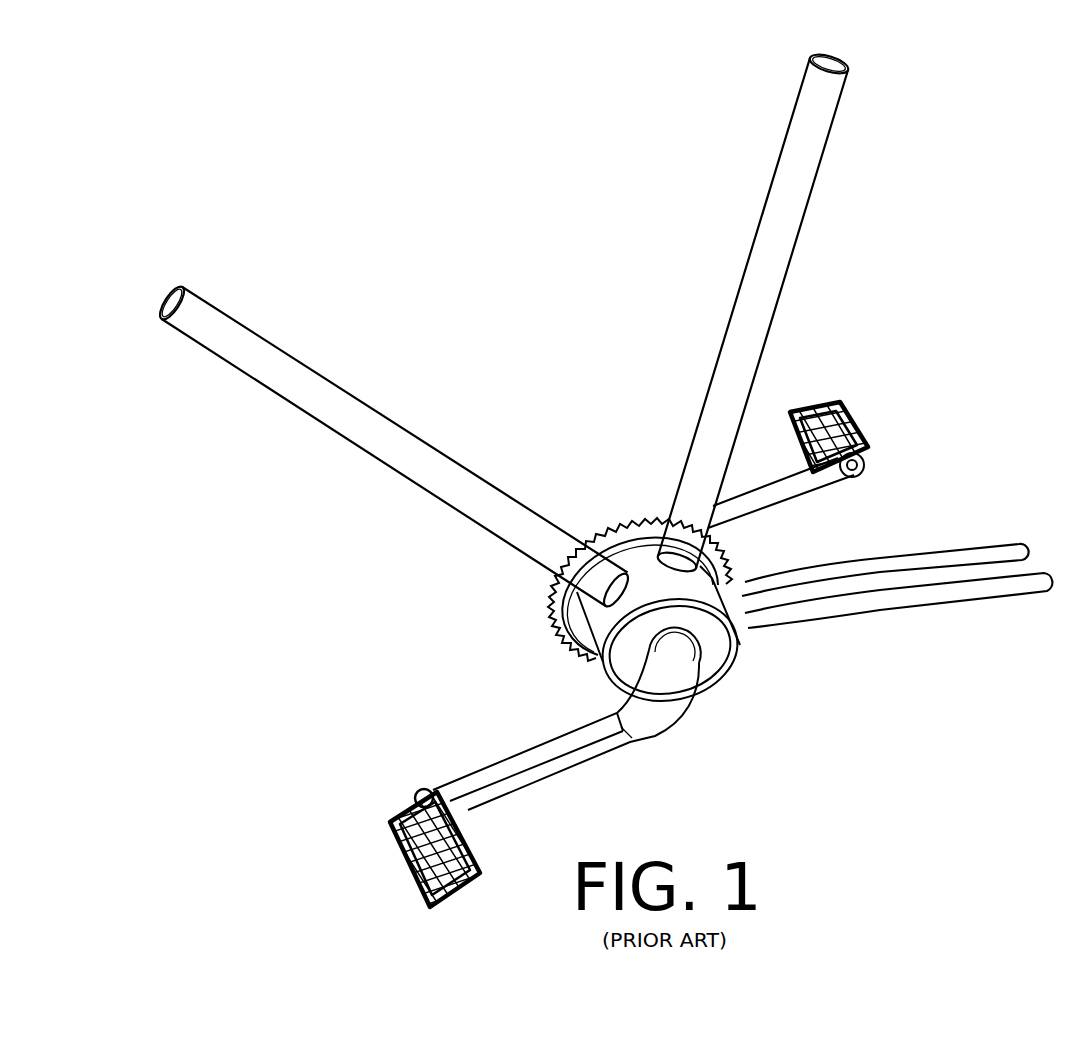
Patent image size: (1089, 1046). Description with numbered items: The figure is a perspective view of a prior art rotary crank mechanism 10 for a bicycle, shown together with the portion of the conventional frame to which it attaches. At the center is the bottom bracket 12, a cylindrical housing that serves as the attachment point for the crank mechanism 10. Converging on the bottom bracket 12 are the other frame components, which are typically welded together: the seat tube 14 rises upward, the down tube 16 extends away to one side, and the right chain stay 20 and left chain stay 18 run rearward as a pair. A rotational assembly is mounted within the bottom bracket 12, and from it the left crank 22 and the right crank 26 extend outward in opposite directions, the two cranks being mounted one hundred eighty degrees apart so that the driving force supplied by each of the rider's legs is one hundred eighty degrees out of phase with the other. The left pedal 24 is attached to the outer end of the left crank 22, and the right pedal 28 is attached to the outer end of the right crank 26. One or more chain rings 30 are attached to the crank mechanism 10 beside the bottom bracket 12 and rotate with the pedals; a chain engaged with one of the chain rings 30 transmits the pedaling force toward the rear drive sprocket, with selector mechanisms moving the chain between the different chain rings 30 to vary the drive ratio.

The crank mechanism 10 is at (320, 569).
The bottom bracket 12 is at (583, 640).
The seat tube 14 is at (822, 165).
The down tube 16 is at (250, 328).
The left chain stay 18 is at (870, 623).
The right chain stay 20 is at (903, 555).
The left crank 22 is at (628, 735).
The left pedal 24 is at (480, 867).
The right crank 26 is at (753, 517).
The right pedal 28 is at (838, 405).
The chain rings 30 is at (627, 530).